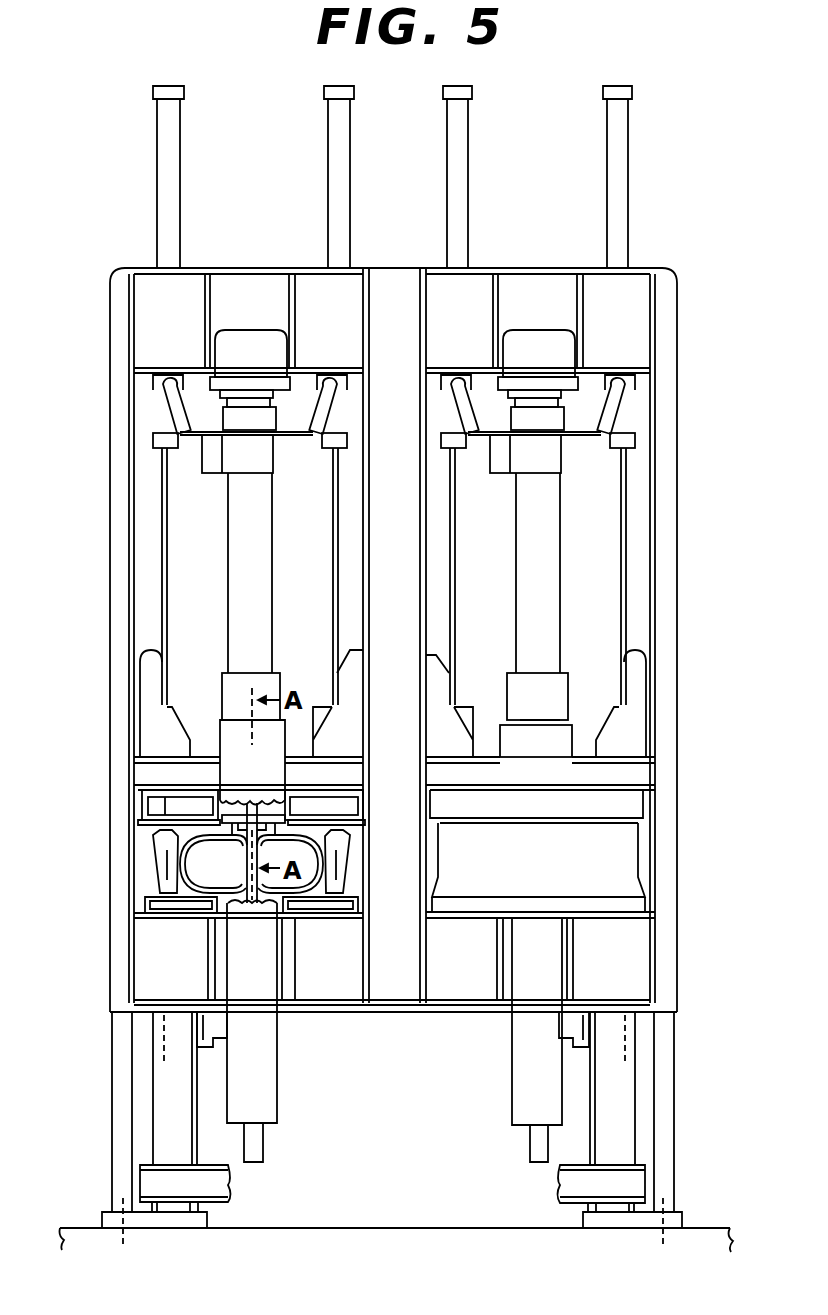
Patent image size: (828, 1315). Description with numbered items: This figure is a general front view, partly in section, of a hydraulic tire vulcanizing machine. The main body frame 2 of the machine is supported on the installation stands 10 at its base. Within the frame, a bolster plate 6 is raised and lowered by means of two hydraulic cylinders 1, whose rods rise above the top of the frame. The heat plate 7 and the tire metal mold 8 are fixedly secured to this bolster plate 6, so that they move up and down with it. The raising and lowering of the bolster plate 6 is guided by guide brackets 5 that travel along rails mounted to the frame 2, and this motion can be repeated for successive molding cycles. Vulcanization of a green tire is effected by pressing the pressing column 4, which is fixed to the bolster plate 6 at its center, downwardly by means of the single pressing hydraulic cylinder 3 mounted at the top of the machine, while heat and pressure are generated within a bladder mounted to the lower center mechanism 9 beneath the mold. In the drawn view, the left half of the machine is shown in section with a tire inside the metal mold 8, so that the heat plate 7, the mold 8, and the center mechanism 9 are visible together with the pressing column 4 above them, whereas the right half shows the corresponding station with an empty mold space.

The hydraulic cylinders 1 is at (162, 151).
The main body frame 2 is at (116, 268).
The pressing hydraulic cylinder 3 is at (219, 340).
The pressing column 4 is at (240, 680).
The guide brackets 5 is at (150, 727).
The bolster plate 6 is at (150, 771).
The heat plate 7 is at (152, 805).
The tire metal mold 8 is at (155, 845).
The center mechanism 9 is at (280, 1090).
The installation stands 10 is at (112, 1128).